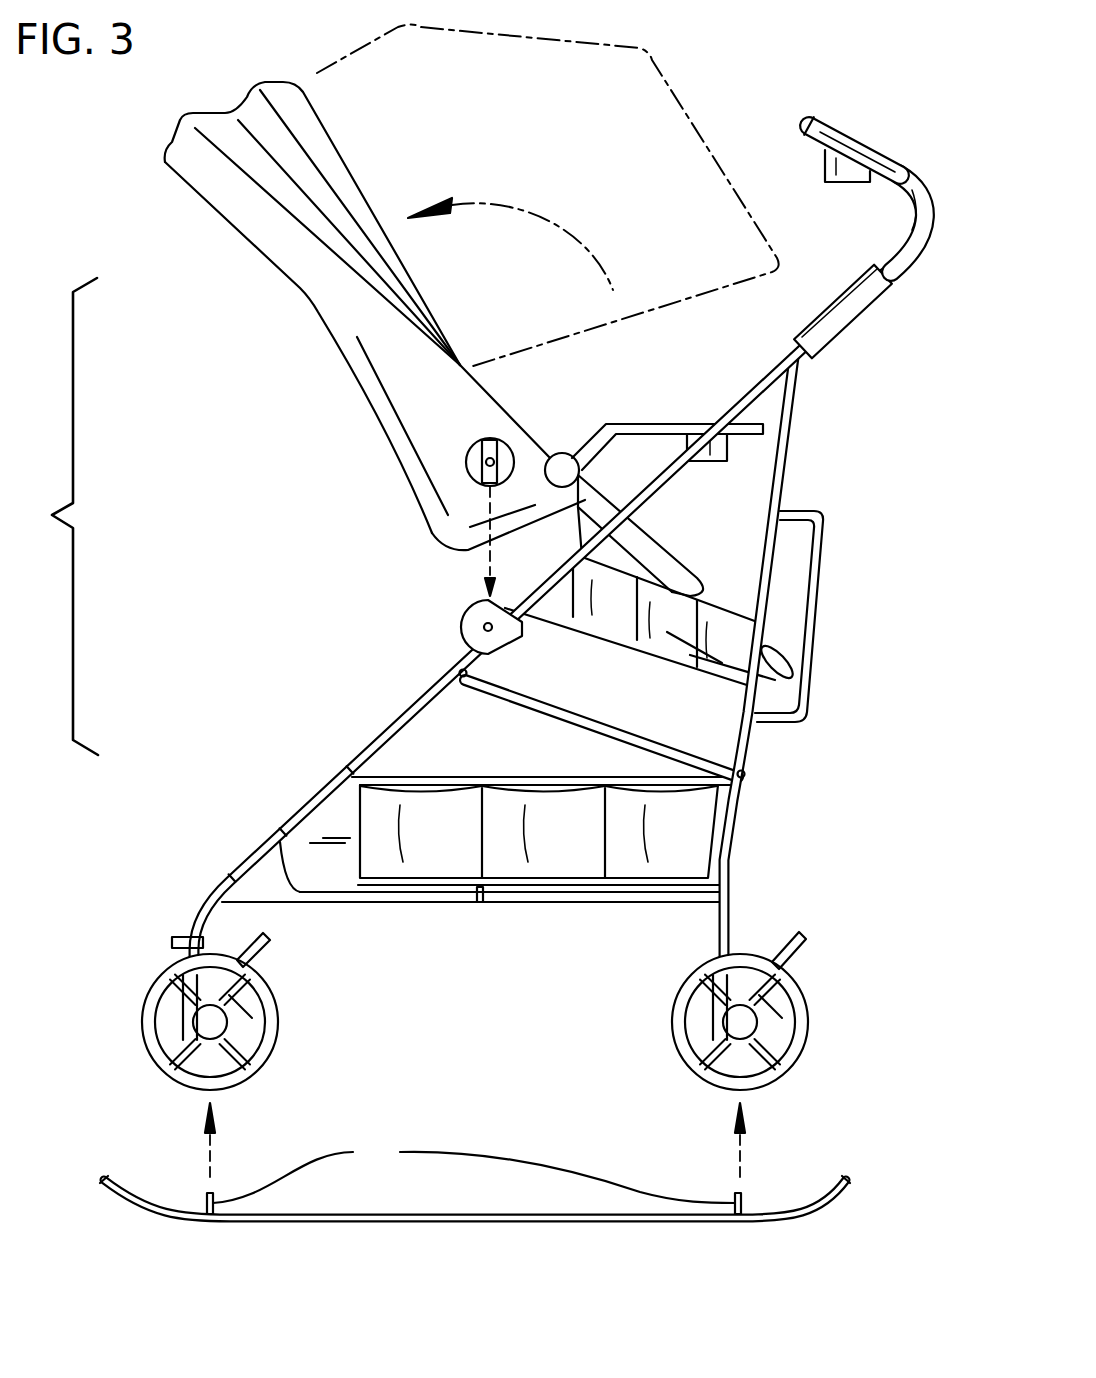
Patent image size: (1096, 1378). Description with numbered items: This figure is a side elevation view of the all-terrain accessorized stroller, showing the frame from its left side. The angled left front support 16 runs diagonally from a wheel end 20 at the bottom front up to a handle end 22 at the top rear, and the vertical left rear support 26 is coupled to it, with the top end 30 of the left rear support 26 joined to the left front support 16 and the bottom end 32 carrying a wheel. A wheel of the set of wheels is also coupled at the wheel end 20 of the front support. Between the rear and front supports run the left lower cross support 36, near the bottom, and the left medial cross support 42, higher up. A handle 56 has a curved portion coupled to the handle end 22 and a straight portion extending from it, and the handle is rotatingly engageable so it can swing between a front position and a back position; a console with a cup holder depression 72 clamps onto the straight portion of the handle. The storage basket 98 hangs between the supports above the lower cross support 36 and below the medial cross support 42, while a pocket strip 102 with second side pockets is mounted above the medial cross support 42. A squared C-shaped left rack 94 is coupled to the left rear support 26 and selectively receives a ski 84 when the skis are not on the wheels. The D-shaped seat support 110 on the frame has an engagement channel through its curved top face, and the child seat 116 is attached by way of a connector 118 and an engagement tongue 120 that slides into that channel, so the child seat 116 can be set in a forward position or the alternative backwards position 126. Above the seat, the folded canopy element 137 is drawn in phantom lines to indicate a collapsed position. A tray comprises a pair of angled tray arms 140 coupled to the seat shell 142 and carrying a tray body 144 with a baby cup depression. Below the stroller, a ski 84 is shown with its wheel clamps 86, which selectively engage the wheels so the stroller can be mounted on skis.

The left front support 16 is at (390, 730).
The wheel end 20 is at (187, 980).
The handle end 22 is at (893, 282).
The left rear support 26 is at (748, 737).
The top end 30 is at (800, 380).
The bottom end 32 is at (737, 973).
The left lower cross support 36 is at (545, 897).
The left medial cross support 42 is at (557, 710).
The handle 56 is at (882, 160).
The cup holder depression 72 is at (850, 178).
The ski 84 is at (463, 1220).
The wheel clamps 86 is at (474, 1174).
The left rack 94 is at (812, 625).
The storage basket 98 is at (348, 848).
The pocket strip 102 is at (790, 690).
The seat support 110 is at (462, 620).
The child seat 116 is at (407, 400).
The connector 118 is at (506, 450).
The engagement tongue 120 is at (466, 466).
The backwards position 126 is at (363, 368).
The canopy ribs 137 is at (317, 220).
The tray arm 140 is at (593, 447).
The seat shell 142 is at (305, 316).
The tray body 144 is at (650, 428).